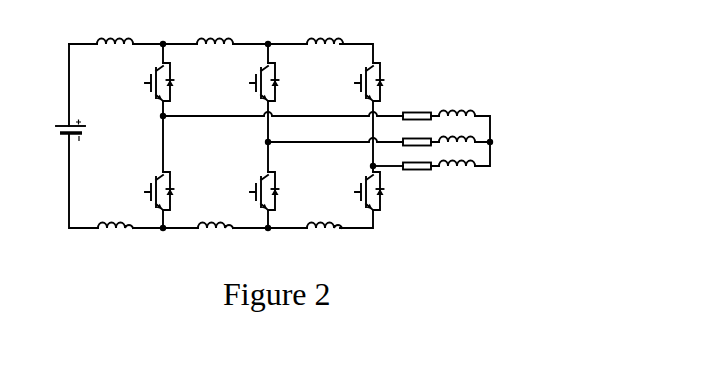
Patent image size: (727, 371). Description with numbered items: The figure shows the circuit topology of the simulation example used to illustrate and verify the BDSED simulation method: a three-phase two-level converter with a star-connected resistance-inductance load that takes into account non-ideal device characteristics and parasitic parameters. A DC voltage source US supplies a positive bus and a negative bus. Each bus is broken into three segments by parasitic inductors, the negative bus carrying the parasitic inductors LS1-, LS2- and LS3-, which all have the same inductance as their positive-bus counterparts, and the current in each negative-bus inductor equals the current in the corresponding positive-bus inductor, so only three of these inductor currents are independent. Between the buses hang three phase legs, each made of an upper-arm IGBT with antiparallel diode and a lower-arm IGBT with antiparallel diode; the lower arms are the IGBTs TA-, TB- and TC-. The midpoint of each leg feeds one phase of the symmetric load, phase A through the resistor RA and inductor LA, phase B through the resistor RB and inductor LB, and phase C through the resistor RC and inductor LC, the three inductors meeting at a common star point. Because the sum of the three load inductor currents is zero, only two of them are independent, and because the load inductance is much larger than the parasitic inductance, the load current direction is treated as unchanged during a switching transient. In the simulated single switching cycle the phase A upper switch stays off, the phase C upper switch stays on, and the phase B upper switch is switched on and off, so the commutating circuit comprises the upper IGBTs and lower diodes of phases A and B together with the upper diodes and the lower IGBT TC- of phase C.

The DC voltage source US is at (59, 131).
The parasitic inductor LS1- is at (115, 237).
The parasitic inductor LS2- is at (215, 237).
The parasitic inductor LS3- is at (324, 237).
The lower arm IGBT of phase A TA- is at (168, 191).
The lower arm IGBT of phase B TB- is at (273, 191).
The lower arm IGBT of phase C TC- is at (378, 191).
The load resistor RA is at (417, 108).
The load resistor RB is at (417, 134).
The load resistor RC is at (417, 158).
The load inductor LA is at (457, 106).
The load inductor LB is at (457, 132).
The load inductor LC is at (457, 156).